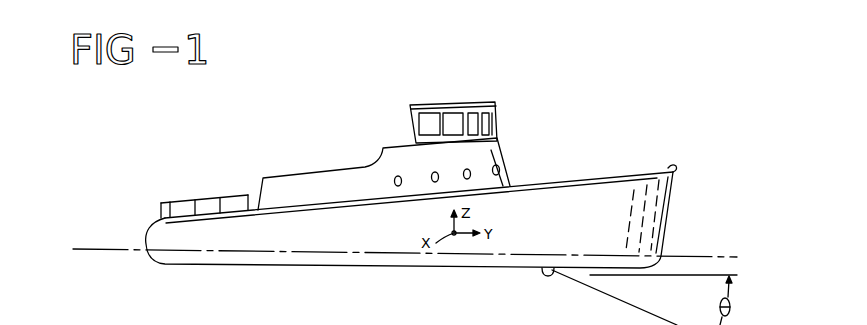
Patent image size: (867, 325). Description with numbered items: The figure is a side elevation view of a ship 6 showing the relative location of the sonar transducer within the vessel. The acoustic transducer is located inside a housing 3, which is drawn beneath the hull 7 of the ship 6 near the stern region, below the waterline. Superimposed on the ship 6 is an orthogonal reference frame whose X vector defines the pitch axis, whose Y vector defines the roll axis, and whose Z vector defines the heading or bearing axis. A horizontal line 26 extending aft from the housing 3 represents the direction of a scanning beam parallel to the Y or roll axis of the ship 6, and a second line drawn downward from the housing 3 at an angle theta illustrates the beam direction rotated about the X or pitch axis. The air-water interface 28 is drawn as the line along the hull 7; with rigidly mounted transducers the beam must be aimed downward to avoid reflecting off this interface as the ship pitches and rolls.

The housing 3 is at (548, 276).
The ship 6 is at (668, 217).
The hull 7 is at (219, 265).
The horizontal line 26 is at (720, 274).
The air-water interface 28 is at (101, 248).